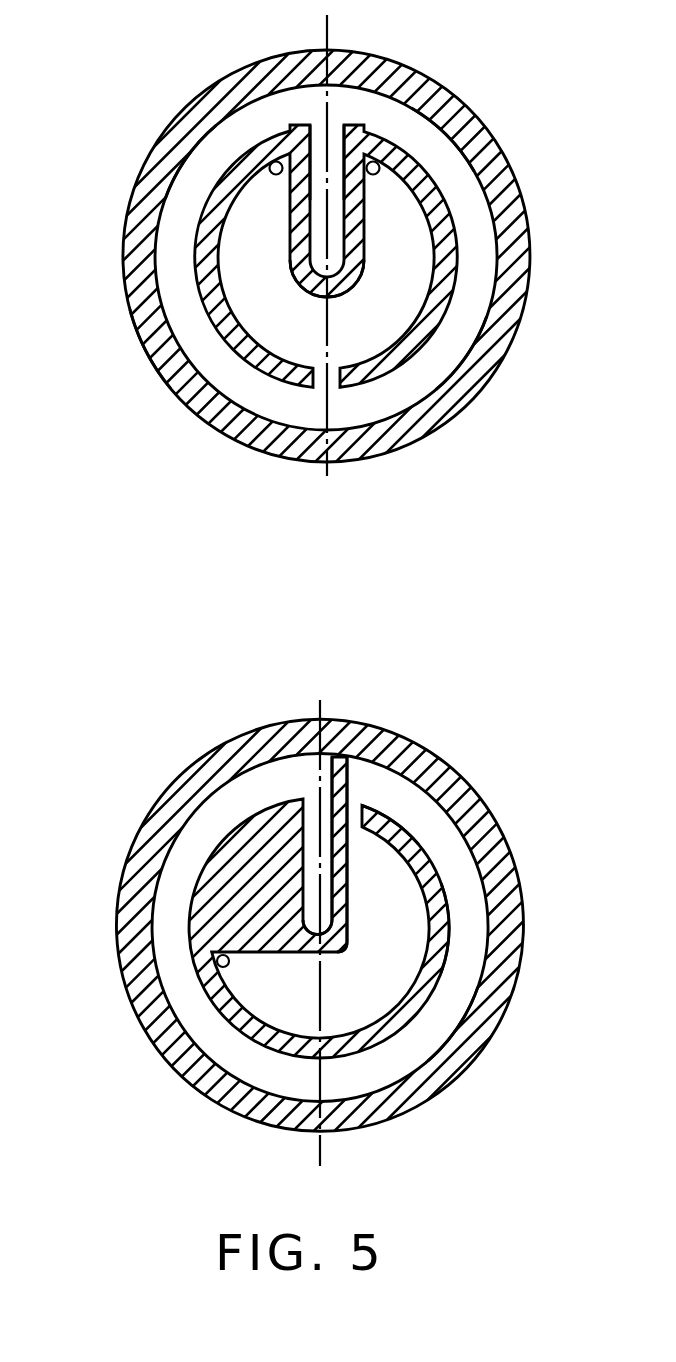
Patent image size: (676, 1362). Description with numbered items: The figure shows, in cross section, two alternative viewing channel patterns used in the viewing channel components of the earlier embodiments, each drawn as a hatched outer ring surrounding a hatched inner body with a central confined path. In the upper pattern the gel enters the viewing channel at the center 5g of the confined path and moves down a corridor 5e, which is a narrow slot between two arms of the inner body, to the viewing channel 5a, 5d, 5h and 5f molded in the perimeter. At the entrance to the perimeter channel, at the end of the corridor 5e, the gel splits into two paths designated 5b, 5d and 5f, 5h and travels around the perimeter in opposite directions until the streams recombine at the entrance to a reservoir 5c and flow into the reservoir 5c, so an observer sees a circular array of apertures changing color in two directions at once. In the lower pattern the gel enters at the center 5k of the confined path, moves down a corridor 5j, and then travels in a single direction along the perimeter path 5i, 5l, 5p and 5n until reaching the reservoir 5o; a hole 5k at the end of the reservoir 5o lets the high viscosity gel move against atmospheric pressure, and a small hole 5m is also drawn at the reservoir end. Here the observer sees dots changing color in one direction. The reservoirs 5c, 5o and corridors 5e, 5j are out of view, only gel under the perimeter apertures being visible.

The viewing channel 5a is at (272, 92).
The viewing channel path 5b is at (218, 143).
The reservoir 5c is at (227, 250).
The viewing channel path 5d is at (187, 330).
The corridor 5e is at (333, 137).
The viewing channel path 5f is at (448, 162).
The center of the confined path 5g is at (328, 266).
The viewing channel path 5h is at (433, 375).
The viewing channel 5i is at (267, 780).
The corridor 5j is at (352, 862).
The center of the confined path / hole 5k is at (332, 929).
The viewing channel 5l is at (165, 963).
The small hole 5m is at (229, 966).
The viewing channel 5n is at (417, 815).
The reservoir 5o is at (413, 923).
The viewing channel 5p is at (437, 1020).